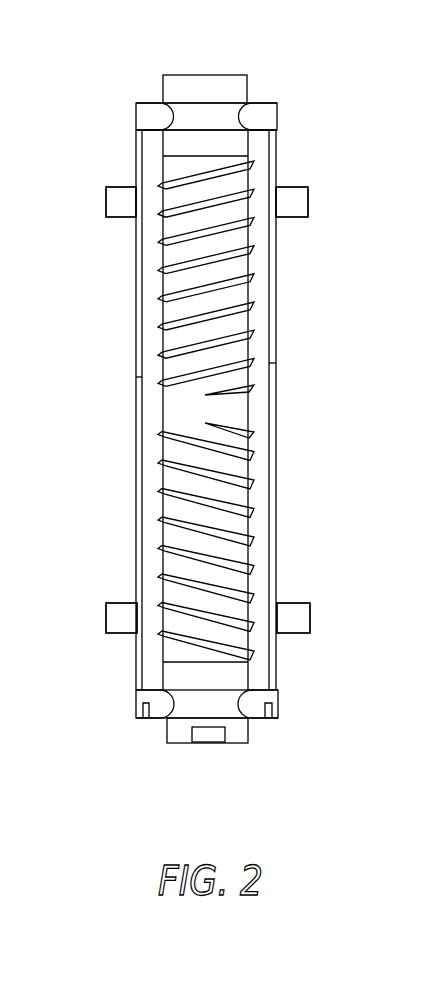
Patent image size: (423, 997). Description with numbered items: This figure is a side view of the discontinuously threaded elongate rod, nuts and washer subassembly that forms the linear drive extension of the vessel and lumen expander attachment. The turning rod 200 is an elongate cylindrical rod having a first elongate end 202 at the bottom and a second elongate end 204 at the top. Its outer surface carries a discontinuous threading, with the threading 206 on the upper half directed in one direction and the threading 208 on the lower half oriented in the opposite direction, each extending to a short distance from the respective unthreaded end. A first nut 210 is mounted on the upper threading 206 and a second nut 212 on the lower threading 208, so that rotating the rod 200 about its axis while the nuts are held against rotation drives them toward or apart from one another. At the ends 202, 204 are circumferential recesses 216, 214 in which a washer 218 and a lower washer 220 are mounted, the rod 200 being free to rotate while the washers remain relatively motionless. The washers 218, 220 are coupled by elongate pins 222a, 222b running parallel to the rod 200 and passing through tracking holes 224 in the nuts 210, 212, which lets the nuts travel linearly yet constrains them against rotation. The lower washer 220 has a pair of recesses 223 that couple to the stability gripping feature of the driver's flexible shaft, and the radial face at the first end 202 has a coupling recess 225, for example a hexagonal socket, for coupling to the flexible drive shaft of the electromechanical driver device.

The turning rod 200 is at (210, 410).
The first elongate end 202 is at (235, 745).
The second elongate end 204 is at (220, 75).
The threading on the upper half 206 is at (248, 278).
The threading on the lower half 208 is at (250, 535).
The first nut 210 is at (298, 196).
The second nut 212 is at (310, 627).
The circumferential recess 214 is at (247, 94).
The circumferential recess 216 is at (163, 716).
The washer 218 is at (277, 118).
The lower washer 220 is at (278, 703).
The elongate pin 222a is at (277, 363).
The elongate pin 222b is at (136, 377).
The recesses 223 is at (268, 718).
The tracking holes 224 is at (280, 218).
The coupling recess 225 is at (203, 745).